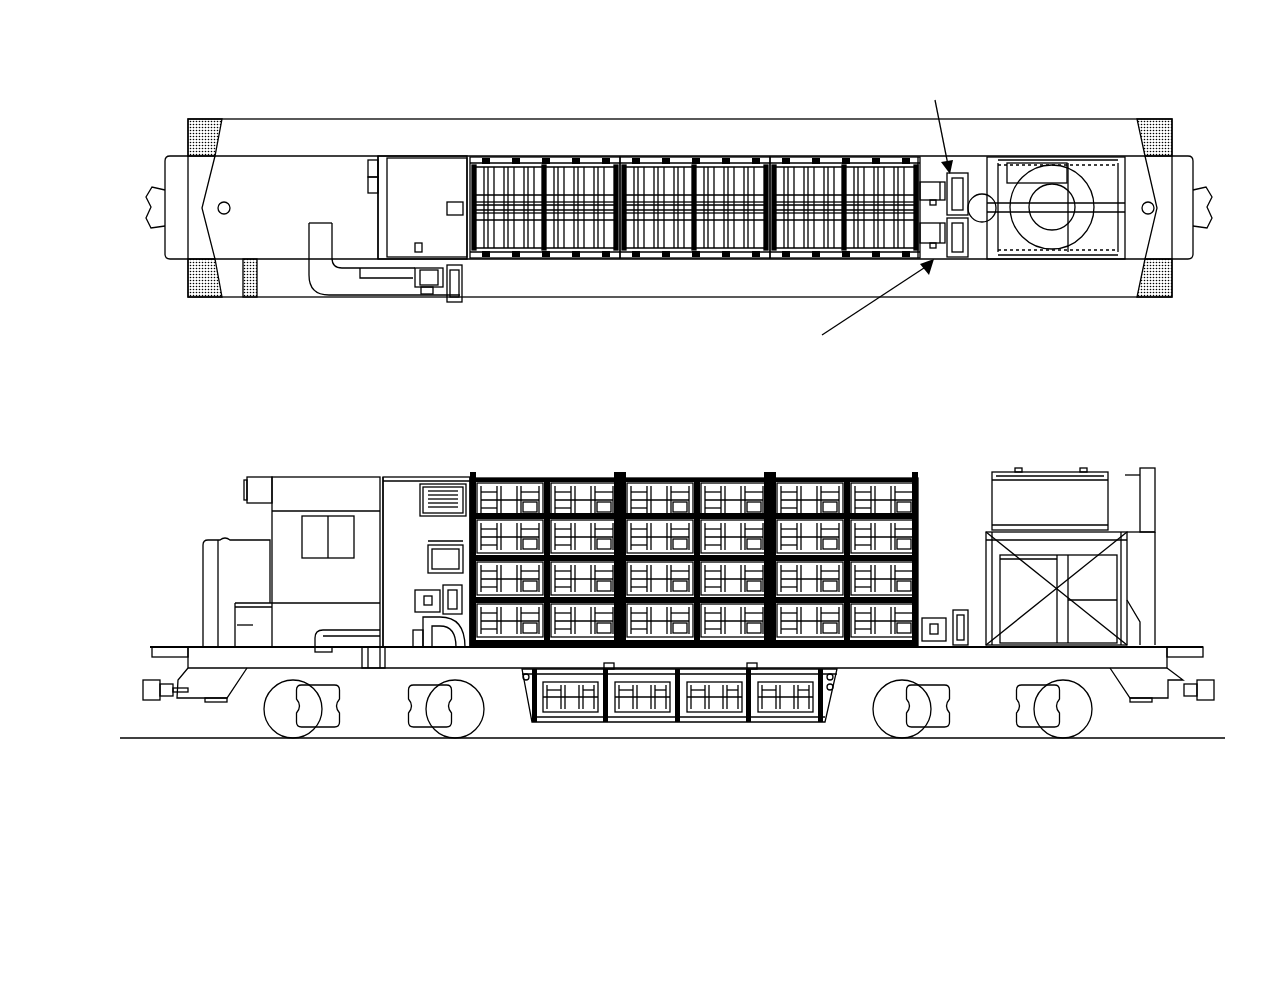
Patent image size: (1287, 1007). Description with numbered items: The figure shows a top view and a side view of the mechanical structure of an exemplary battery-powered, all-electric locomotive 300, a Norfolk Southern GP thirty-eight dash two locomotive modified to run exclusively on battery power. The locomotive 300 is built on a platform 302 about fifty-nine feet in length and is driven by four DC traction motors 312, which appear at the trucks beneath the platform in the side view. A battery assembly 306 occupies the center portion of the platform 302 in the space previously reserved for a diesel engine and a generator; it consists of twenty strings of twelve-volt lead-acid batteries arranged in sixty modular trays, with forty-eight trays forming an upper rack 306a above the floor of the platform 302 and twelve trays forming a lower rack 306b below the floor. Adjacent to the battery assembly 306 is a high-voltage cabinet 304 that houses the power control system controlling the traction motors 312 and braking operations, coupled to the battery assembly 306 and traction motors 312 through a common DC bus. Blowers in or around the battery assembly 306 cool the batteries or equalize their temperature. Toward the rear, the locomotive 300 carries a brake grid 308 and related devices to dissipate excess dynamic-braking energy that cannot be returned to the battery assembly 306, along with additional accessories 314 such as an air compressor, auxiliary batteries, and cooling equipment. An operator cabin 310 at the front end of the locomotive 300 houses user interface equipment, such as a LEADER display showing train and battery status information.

The battery-powered, all-electric locomotive 300 is at (146, 94).
The platform 302 is at (252, 138).
The high-voltage cabinet 304 is at (404, 176).
The battery assembly 306 is at (689, 138).
The upper rack 306a is at (657, 483).
The lower rack 306b is at (587, 710).
The brake grid 308 is at (1052, 170).
The operator cabin 310 is at (287, 482).
The DC traction motors 312 is at (330, 715).
The additional accessories 314 is at (1113, 580).